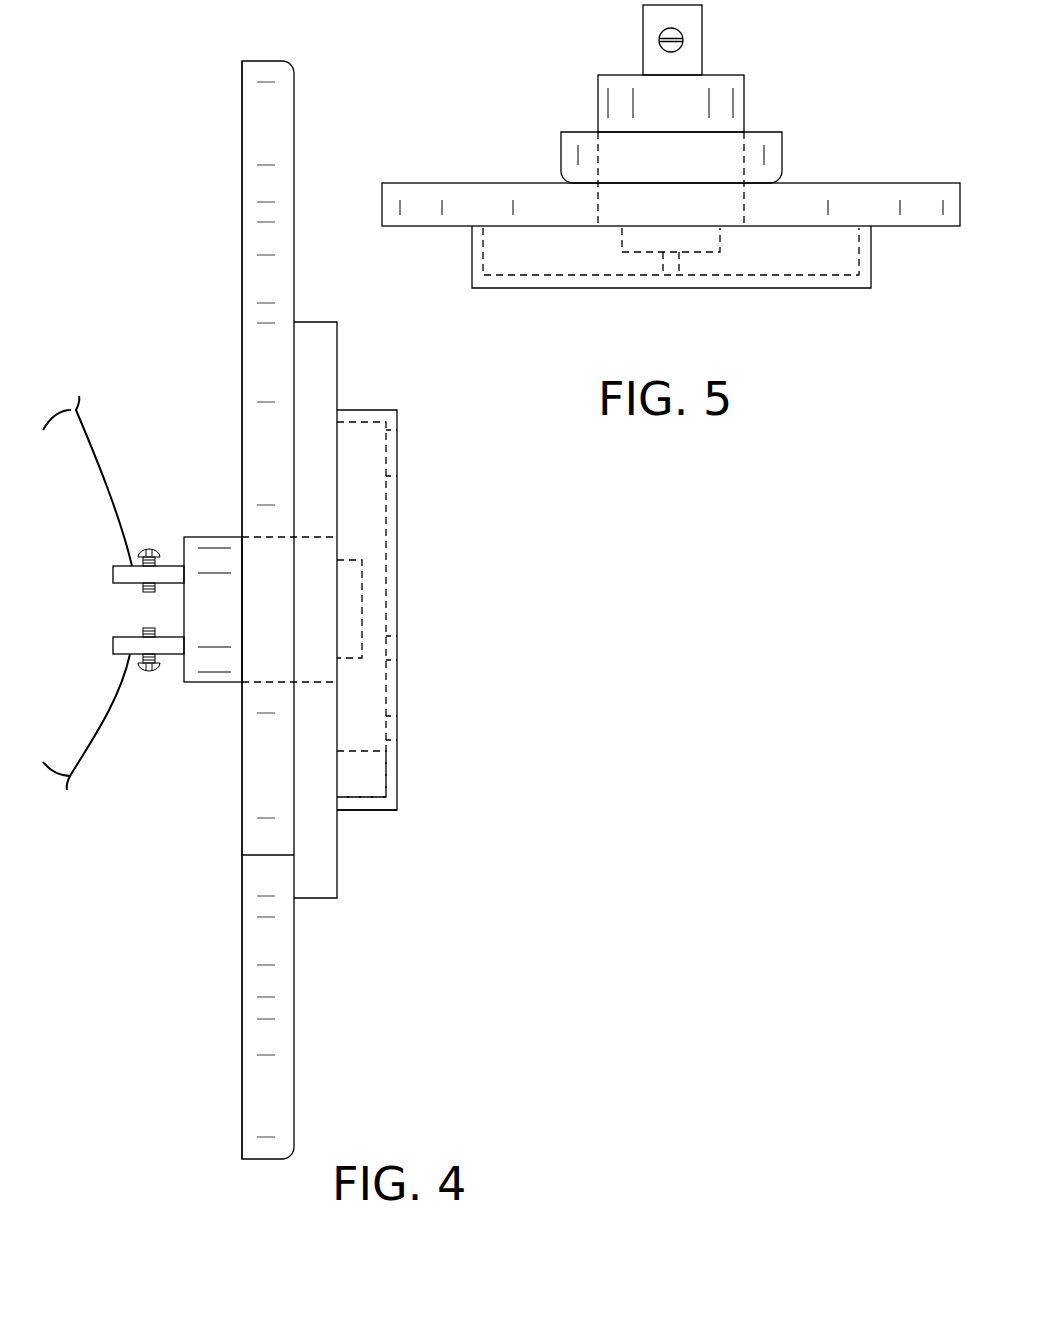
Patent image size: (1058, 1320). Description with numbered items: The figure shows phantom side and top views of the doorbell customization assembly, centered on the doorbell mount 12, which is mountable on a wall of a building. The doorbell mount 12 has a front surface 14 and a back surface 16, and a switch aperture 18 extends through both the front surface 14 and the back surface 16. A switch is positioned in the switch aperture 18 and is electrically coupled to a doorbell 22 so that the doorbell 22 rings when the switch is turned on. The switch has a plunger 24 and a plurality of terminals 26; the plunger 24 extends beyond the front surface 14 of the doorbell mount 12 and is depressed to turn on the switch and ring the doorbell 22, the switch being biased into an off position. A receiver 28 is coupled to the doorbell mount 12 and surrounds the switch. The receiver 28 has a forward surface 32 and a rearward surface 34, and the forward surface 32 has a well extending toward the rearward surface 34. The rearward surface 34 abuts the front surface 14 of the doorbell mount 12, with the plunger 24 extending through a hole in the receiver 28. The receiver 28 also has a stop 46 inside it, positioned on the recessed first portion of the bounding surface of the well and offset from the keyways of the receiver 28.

In FIG. 4, the doorbell mount 12 is at (294, 175).
In FIG. 5, the doorbell mount 12 is at (913, 183).
In FIG. 4, the front surface 14 is at (294, 295).
In FIG. 4, the back surface 16 is at (242, 263).
In FIG. 4, the switch aperture 18 is at (318, 578).
In FIG. 5, the switch aperture 18 is at (653, 215).
In FIG. 4, the doorbell 22 is at (113, 485).
In FIG. 5, the plunger 24 is at (695, 252).
In FIG. 4, the terminals 26 is at (167, 566).
In FIG. 4, the receiver 28 is at (368, 410).
In FIG. 5, the receiver 28 is at (871, 255).
In FIG. 4, the forward surface 32 is at (397, 792).
In FIG. 4, the rearward surface 34 is at (293, 868).
In FIG. 4, the stop 46 is at (355, 750).